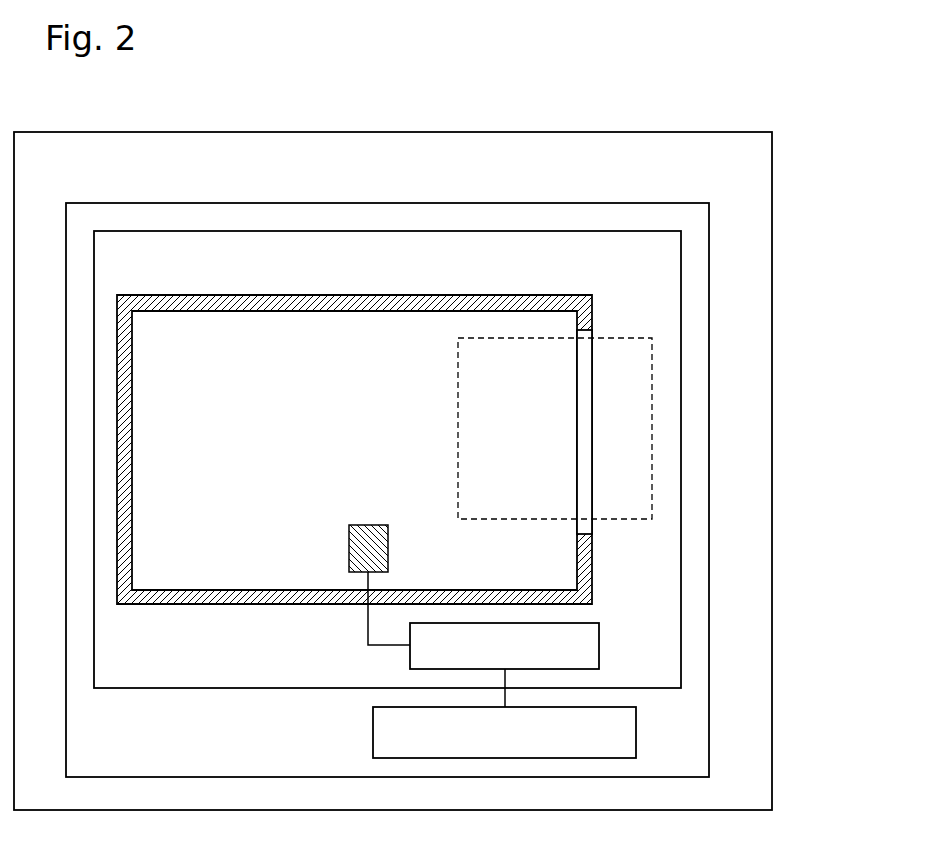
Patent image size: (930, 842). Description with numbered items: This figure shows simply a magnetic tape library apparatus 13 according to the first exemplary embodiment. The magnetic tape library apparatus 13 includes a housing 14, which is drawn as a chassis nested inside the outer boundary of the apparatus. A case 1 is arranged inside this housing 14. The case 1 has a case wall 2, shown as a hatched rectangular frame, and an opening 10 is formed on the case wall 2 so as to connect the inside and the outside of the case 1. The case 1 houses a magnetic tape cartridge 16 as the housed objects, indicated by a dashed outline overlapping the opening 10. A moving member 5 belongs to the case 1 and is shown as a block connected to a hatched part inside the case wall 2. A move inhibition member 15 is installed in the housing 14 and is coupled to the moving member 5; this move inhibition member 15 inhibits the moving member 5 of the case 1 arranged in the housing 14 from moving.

The case 1 is at (684, 300).
The case wall 2 is at (385, 295).
The moving member 5 is at (599, 646).
The opening 10 is at (586, 488).
The magnetic tape library apparatus 13 is at (680, 131).
The housing 14 is at (627, 202).
The move inhibition member 15 is at (636, 733).
The magnetic tape cartridge 16 is at (618, 337).